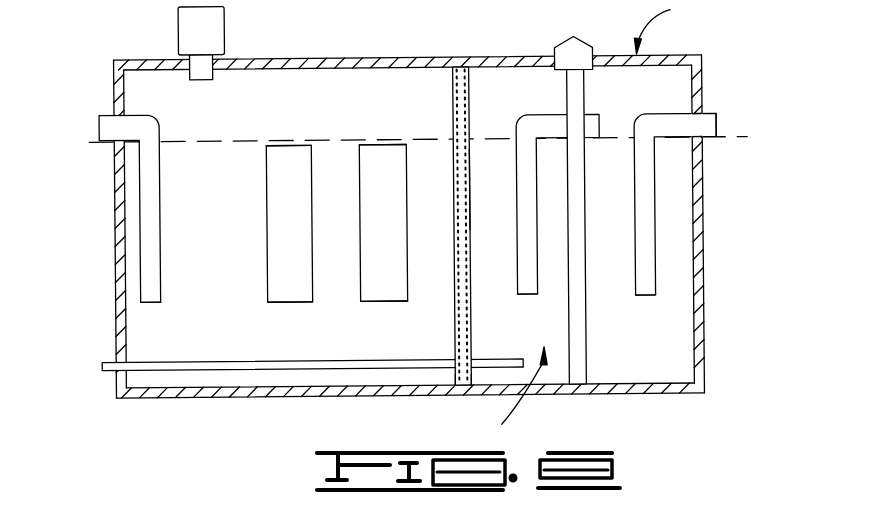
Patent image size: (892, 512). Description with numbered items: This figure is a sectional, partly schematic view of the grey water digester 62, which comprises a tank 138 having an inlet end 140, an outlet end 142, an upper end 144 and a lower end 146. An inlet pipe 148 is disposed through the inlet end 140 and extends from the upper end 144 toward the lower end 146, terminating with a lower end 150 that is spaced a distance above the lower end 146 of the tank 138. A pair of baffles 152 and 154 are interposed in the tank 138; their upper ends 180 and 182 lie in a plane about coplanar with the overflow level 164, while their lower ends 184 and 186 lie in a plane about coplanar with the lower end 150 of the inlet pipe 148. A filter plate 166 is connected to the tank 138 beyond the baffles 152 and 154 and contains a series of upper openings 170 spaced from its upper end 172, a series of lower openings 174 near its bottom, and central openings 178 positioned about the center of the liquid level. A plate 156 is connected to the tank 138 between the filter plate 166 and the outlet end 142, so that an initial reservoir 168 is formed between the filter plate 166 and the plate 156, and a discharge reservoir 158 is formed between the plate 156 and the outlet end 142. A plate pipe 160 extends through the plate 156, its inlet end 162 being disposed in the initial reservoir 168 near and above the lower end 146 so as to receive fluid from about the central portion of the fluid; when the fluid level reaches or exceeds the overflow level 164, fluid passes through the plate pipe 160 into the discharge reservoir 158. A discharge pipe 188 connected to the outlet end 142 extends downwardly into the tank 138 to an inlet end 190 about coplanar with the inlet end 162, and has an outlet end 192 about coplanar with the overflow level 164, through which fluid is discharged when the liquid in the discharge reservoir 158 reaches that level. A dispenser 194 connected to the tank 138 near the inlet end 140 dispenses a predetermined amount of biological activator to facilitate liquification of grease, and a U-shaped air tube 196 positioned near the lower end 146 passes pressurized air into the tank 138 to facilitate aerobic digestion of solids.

The grey water digester 62 is at (666, 27).
The tank 138 is at (704, 78).
The inlet end 140 is at (114, 80).
The outlet end 142 is at (705, 255).
The upper end 144 is at (394, 58).
The lower end 146 is at (597, 396).
The inlet pipe 148 is at (158, 123).
The lower end 150 is at (148, 306).
The baffle 152 is at (267, 197).
The baffle 154 is at (360, 190).
The plate 156 is at (568, 100).
The discharge reservoir 158 is at (610, 178).
The plate pipe 160 is at (527, 117).
The inlet end 162 is at (535, 297).
The overflow level 164 is at (737, 142).
The filter plate 166 is at (471, 188).
The initial reservoir 168 is at (505, 394).
The upper openings 170 is at (465, 57).
The upper end 172 is at (646, 505).
The lower openings 174 is at (455, 386).
The central openings 178 is at (469, 244).
The upper end 180 is at (293, 143).
The upper end 182 is at (375, 143).
The lower end 184 is at (295, 303).
The lower end 186 is at (385, 303).
The discharge pipe 188 is at (704, 110).
The inlet end 190 is at (635, 297).
The outlet end 192 is at (718, 120).
The dispenser 194 is at (227, 24).
The U-shaped air tube 196 is at (247, 370).